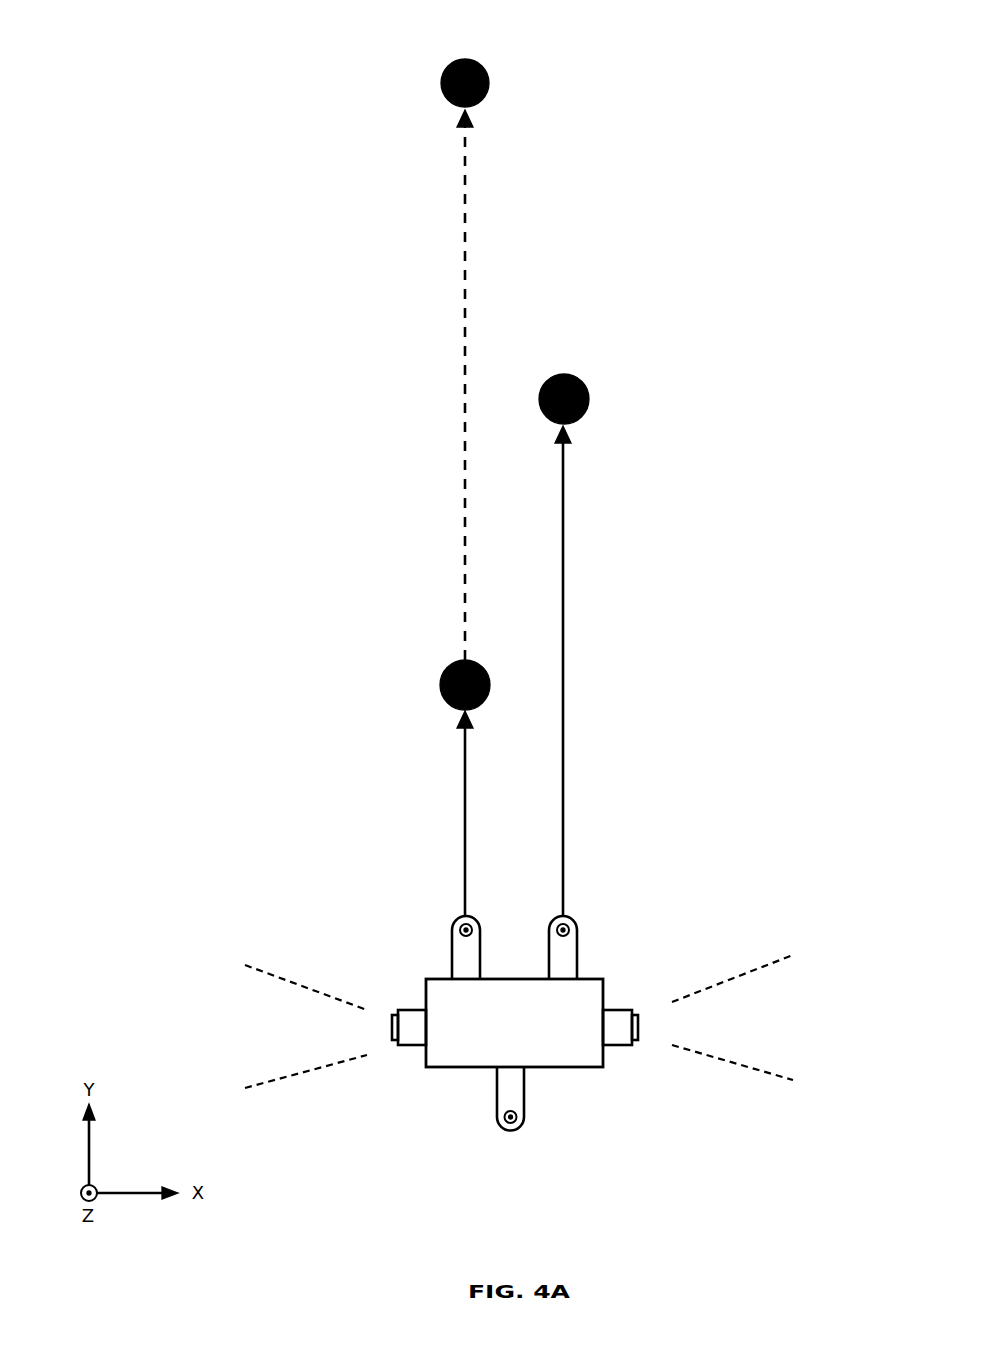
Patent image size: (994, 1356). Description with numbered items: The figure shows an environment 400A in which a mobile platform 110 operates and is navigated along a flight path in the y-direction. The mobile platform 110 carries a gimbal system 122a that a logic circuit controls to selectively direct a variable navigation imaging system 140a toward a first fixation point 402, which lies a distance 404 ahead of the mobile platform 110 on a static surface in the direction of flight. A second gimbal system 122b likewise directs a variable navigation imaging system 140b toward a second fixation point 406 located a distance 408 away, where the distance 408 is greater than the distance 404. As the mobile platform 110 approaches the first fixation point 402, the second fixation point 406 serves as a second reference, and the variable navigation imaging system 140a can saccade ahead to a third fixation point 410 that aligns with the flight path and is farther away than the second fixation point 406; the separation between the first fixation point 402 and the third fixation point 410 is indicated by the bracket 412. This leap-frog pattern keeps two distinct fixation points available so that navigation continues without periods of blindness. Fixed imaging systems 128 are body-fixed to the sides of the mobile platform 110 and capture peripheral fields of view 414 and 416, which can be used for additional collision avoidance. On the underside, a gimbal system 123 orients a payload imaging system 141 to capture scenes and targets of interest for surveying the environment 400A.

The environment 400A is at (162, 65).
The mobile platform 110 is at (514, 1023).
The gimbal system 122a is at (452, 962).
The gimbal system 122b is at (577, 950).
The gimbal system 123 is at (525, 1082).
The fixed imaging systems 128 is at (396, 1046).
The variable navigation imaging system 140a is at (452, 930).
The variable navigation imaging system 140b is at (575, 918).
The payload imaging system 141 is at (524, 1117).
The first fixation point 402 is at (440, 693).
The distance 404 is at (424, 728).
The second fixation point 406 is at (588, 408).
The distance 408 is at (607, 445).
The third fixation point 410 is at (490, 93).
The third distance 412 is at (424, 128).
The peripheral field of view 414 is at (224, 965).
The peripheral field of view 416 is at (816, 955).